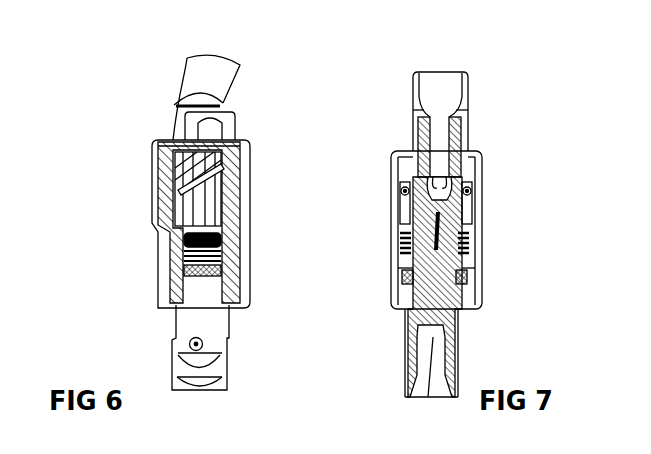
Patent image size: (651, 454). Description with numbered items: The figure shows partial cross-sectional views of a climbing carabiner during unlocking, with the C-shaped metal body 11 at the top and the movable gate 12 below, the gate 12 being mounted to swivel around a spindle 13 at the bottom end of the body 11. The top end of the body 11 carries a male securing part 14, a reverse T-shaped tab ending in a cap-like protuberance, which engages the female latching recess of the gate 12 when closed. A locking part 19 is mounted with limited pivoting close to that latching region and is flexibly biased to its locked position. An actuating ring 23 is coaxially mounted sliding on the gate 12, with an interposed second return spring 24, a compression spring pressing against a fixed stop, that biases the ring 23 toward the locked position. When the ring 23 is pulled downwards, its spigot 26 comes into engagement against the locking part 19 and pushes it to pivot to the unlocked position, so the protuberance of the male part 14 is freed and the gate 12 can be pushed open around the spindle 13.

In FIG. 6, the body 11 is at (217, 73).
In FIG. 6, the gate 12 is at (203, 321).
In FIG. 7, the gate 12 is at (442, 282).
In FIG. 6, the spindle 13 is at (203, 344).
In FIG. 6, the male securing part 14 is at (175, 106).
In FIG. 7, the male securing part 14 is at (481, 124).
In FIG. 6, the locking part 19 is at (242, 189).
In FIG. 7, the locking part 19 is at (476, 189).
In FIG. 6, the actuating ring 23 is at (155, 152).
In FIG. 7, the second return spring 24 is at (476, 245).
In FIG. 6, the spigot 26 is at (139, 189).